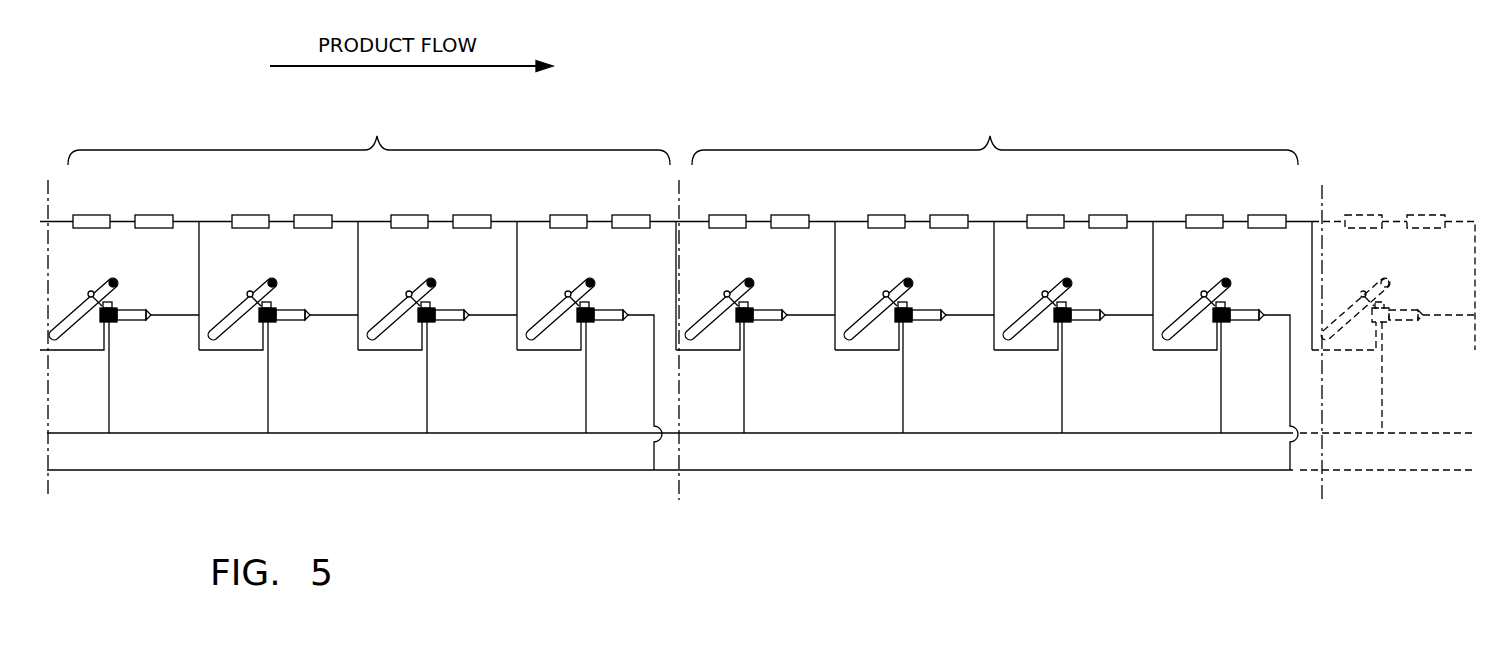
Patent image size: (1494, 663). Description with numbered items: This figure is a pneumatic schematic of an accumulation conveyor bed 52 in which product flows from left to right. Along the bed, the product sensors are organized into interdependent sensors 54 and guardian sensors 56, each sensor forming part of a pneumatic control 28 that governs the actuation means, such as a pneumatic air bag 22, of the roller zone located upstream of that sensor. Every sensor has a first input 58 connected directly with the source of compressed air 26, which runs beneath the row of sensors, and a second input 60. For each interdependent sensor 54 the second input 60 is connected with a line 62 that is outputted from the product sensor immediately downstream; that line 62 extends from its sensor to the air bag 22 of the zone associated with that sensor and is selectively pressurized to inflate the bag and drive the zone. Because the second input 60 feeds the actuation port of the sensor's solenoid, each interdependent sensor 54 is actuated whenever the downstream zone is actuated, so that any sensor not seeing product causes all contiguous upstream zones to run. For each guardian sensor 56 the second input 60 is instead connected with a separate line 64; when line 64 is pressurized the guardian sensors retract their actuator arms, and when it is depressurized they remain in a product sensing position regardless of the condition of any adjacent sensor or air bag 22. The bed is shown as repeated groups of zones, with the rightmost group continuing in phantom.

The pneumatic air bag 22 is at (95, 215).
The source of compressed air 26 is at (287, 434).
The pneumatic control 28 is at (112, 323).
The conveyor bed 52 is at (392, 124).
The interdependent sensor 54 is at (95, 279).
The guardian sensor 56 is at (572, 279).
The first input 58 is at (428, 398).
The second input 60 is at (482, 314).
The line 62 is at (200, 277).
The line 64 is at (432, 471).